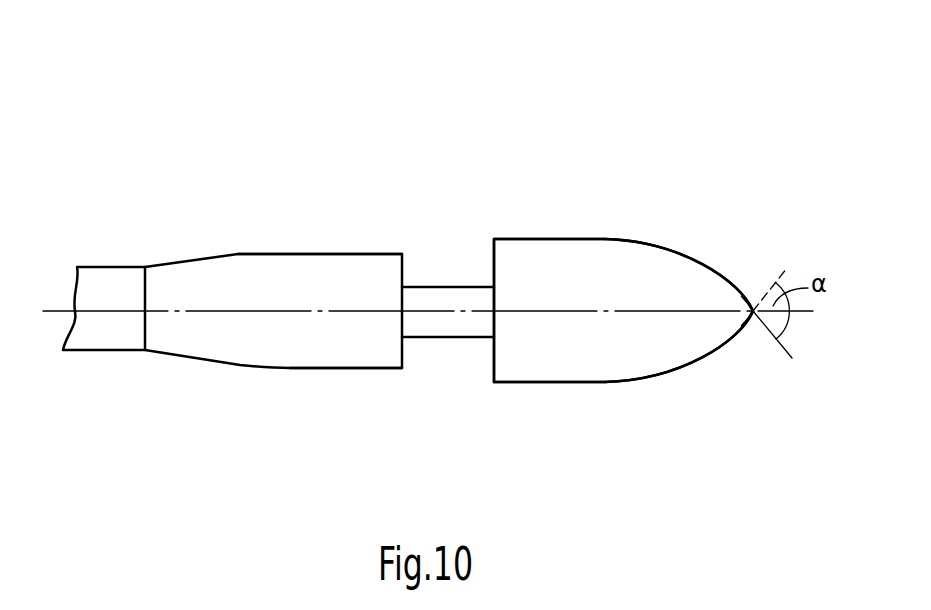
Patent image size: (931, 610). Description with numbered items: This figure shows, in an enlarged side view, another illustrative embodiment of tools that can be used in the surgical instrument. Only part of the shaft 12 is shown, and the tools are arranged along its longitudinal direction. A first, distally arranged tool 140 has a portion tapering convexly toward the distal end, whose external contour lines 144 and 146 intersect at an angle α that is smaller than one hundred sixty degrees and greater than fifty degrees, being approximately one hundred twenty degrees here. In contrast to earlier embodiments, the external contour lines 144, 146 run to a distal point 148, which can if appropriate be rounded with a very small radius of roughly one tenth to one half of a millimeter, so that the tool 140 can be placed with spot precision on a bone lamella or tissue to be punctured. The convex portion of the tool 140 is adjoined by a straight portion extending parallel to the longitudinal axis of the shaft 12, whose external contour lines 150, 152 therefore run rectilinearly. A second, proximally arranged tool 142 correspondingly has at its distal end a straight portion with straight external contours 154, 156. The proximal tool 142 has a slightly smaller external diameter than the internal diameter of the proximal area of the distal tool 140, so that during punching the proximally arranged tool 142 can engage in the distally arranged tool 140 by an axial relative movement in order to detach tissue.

The shaft 12 is at (97, 260).
The second, proximally arranged tool 142 is at (257, 268).
The external contour 154 is at (357, 253).
The external contour 156 is at (332, 368).
The first, distally arranged tool 140 is at (567, 263).
The external contour line 150 is at (528, 237).
The external contour line 152 is at (557, 383).
The external contour line 144 is at (683, 253).
The external contour line 146 is at (695, 367).
The distal point 148 is at (737, 301).